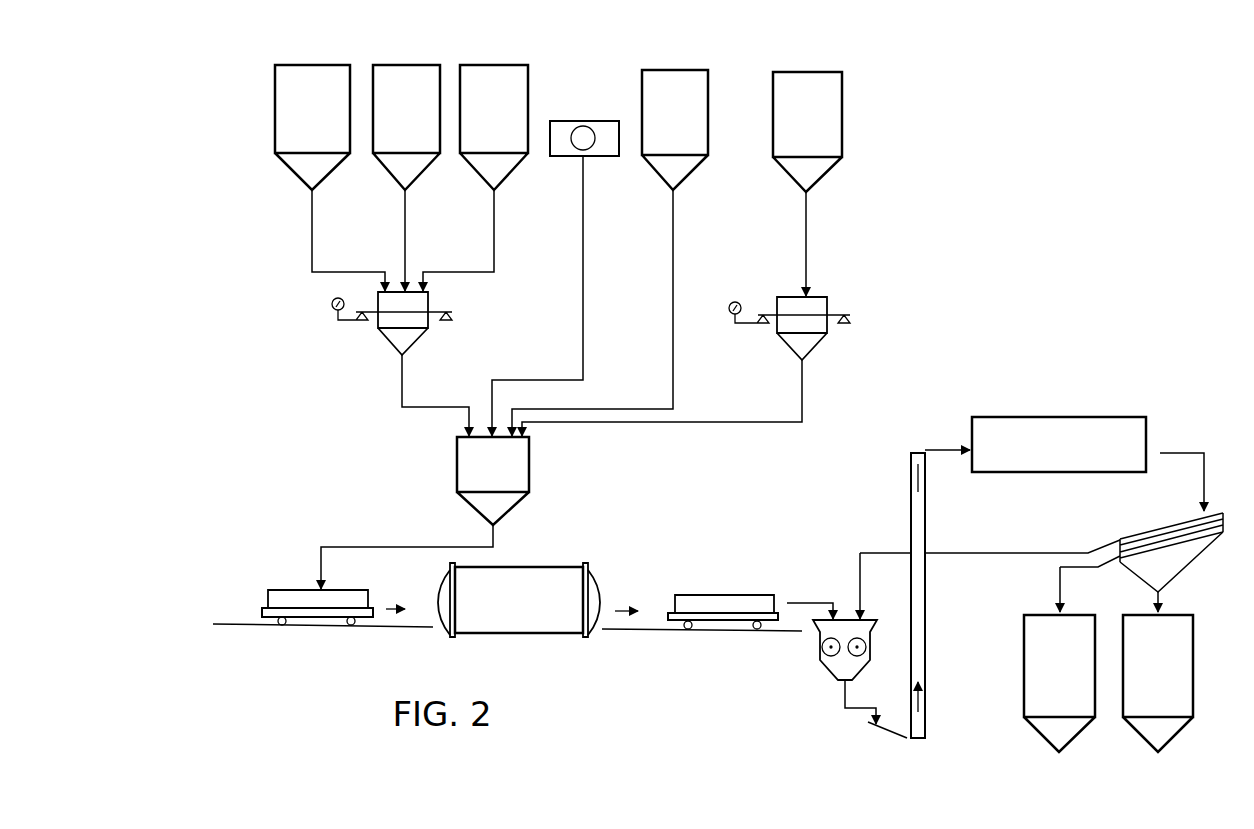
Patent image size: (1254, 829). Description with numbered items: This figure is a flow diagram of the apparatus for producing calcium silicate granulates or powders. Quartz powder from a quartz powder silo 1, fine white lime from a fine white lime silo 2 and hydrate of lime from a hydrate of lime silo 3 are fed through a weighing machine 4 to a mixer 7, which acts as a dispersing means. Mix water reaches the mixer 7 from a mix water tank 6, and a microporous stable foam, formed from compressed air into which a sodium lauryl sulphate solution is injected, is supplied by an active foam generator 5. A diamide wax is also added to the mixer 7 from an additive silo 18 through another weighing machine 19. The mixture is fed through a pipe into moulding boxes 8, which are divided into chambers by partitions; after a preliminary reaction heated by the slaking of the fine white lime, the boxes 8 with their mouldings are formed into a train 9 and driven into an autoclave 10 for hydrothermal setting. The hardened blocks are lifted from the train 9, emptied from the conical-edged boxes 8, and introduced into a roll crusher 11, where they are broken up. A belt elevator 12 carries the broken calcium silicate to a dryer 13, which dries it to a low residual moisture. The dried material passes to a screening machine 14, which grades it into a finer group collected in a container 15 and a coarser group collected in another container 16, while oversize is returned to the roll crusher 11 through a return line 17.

The quartz powder silo 1 is at (314, 85).
The fine white lime silo 2 is at (405, 86).
The hydrate of lime silo 3 is at (490, 86).
The weighing machine 4 is at (416, 305).
The active foam generator 5 is at (603, 133).
The mix water tank 6 is at (678, 88).
The mixer 7 is at (473, 455).
The moulding boxes 8 is at (302, 600).
The train 9 is at (262, 610).
The autoclave 10 is at (538, 583).
The roll crusher 11 is at (845, 632).
The belt elevator 12 is at (918, 505).
The dryer 13 is at (1048, 432).
The screening machine 14 is at (1178, 562).
The container 15 is at (1178, 645).
The container 16 is at (1042, 635).
The return line 17 is at (990, 536).
The additive silo 18 is at (810, 90).
The weighing machine 19 is at (813, 308).